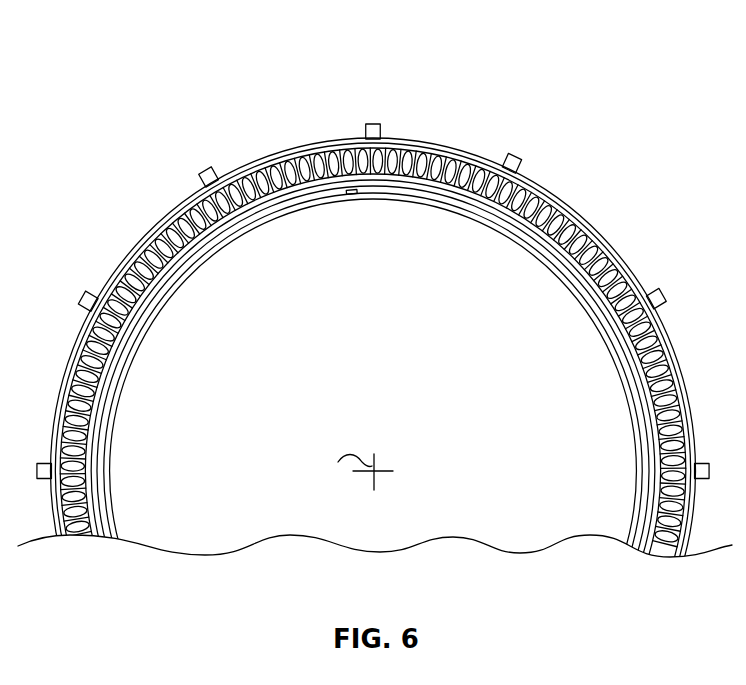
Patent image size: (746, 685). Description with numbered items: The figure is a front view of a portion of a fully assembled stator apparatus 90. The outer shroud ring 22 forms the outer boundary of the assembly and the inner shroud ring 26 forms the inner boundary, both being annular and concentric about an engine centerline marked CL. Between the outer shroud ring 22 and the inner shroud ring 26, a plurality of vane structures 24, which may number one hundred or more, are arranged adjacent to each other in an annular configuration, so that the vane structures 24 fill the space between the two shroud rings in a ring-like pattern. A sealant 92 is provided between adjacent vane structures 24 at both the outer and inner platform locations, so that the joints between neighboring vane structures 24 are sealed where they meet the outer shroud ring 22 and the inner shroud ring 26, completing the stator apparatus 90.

The stator apparatus 90 is at (473, 82).
The outer shroud ring 22 is at (594, 231).
The vane structure 24 is at (610, 252).
The inner shroud ring 26 is at (552, 268).
The sealant 92 is at (607, 340).